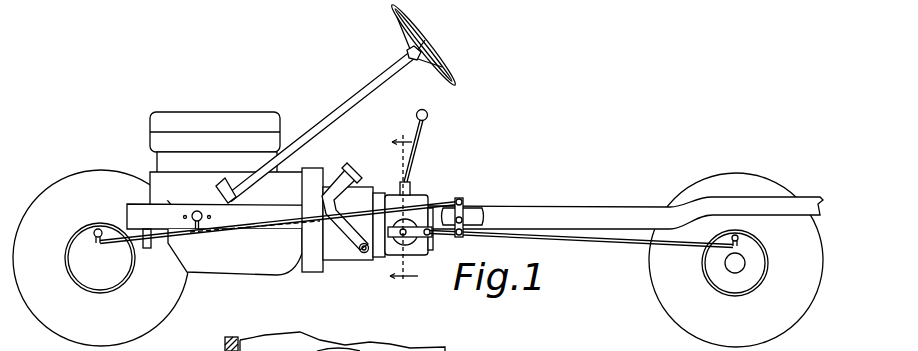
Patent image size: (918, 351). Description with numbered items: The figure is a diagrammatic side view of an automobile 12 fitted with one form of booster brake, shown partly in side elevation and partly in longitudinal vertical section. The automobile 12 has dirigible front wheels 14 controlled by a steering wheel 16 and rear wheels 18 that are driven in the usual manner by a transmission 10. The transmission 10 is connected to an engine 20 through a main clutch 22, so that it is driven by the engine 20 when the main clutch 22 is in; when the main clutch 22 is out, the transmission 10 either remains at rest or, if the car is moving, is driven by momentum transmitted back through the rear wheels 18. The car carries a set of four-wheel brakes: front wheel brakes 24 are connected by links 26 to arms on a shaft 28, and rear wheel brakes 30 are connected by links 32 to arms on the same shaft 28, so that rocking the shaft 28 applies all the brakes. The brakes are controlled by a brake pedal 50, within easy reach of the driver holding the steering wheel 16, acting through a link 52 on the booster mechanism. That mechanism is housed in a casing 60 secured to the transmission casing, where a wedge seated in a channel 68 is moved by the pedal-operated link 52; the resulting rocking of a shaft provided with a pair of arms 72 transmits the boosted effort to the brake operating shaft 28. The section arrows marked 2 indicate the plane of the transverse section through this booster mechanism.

The transmission 10 is at (413, 250).
The automobile 12 is at (517, 218).
The dirigible front wheels 14 is at (88, 320).
The steering wheel 16 is at (440, 68).
The rear wheels 18 is at (672, 300).
The engine 20 is at (205, 160).
The main clutch 22 is at (335, 253).
The front wheel brakes 24 is at (100, 232).
The links 26 is at (168, 243).
The shaft 28 is at (468, 207).
The rear wheel brakes 30 is at (738, 238).
The links 32 is at (602, 246).
The brake pedal 50 is at (345, 168).
The link 52 is at (377, 230).
The casing 60 is at (407, 222).
The channel 68 is at (457, 206).
The arms 72 is at (412, 247).
The section line 2- 2 is at (394, 206).